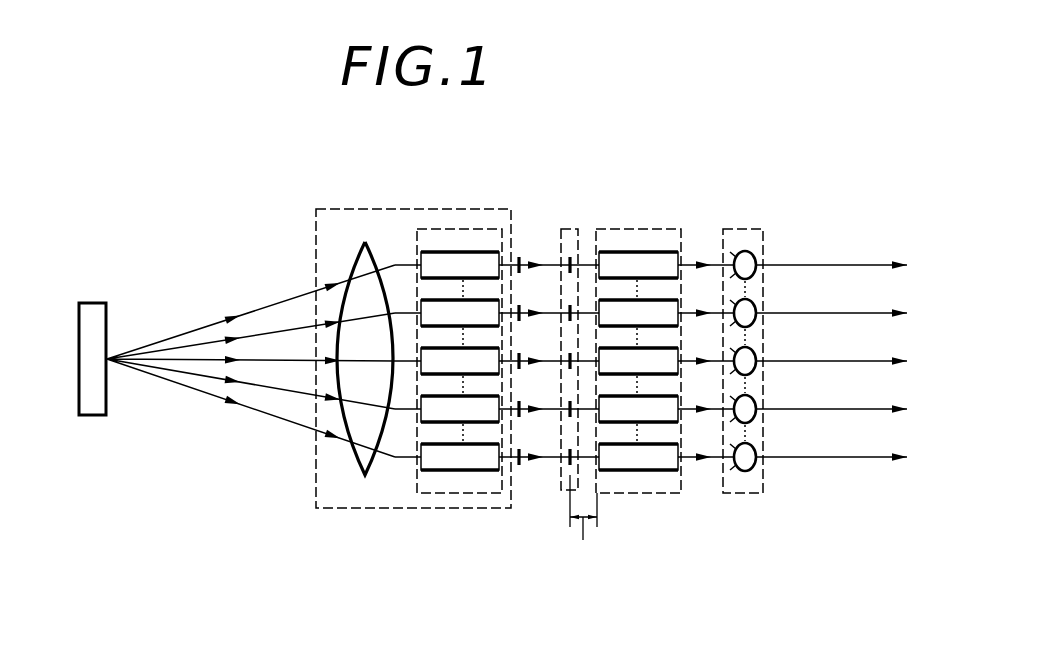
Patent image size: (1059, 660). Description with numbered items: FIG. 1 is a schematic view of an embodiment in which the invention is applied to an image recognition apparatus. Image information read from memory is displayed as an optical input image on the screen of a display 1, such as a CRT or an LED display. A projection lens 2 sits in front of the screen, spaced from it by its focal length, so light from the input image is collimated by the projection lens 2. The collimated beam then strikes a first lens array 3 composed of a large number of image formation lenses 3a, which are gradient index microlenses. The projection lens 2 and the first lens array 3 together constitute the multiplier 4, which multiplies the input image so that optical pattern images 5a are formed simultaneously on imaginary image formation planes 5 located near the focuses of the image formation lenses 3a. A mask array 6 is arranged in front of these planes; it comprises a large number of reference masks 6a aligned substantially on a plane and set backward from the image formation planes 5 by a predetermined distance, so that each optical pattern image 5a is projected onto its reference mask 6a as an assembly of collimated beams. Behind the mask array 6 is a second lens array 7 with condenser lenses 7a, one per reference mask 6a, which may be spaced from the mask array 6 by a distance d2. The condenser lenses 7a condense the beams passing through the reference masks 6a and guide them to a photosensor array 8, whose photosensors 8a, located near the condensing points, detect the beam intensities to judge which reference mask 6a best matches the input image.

The display 1 is at (95, 312).
The projection lens 2 is at (366, 246).
The first lens array 3 is at (475, 229).
The image formation lenses 3a is at (444, 308).
The multiplier 4 is at (316, 243).
The imaginary image formation planes 5 is at (529, 247).
The optical pattern images 5a is at (521, 415).
The mask array 6 is at (558, 470).
The reference masks 6a is at (574, 310).
The second lens array 7 is at (623, 229).
The condenser lenses 7a is at (663, 308).
The photosensor array 8 is at (743, 229).
The photosensors 8a is at (751, 308).
The distance d2 is at (585, 523).